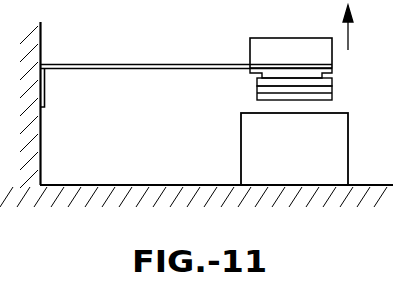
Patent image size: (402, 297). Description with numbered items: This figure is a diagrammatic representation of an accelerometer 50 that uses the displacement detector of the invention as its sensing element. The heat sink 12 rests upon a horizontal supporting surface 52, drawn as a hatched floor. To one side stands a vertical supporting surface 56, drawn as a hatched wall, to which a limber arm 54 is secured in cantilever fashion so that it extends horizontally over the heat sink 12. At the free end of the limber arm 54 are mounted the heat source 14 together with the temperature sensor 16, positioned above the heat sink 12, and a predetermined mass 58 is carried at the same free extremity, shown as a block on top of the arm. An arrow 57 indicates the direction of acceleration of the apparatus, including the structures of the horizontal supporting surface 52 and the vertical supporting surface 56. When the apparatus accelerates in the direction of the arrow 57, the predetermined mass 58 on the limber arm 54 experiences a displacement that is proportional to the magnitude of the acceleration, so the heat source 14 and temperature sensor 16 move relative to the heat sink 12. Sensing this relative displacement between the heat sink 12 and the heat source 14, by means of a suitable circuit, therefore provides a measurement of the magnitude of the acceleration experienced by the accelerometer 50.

The heat sink 12 is at (307, 157).
The heat source 14 is at (332, 95).
The temperature sensor 16 is at (332, 83).
The accelerometer 50 is at (340, 68).
The horizontal supporting surface 52 is at (163, 185).
The limber arm 54 is at (164, 70).
The vertical supporting surface 56 is at (41, 52).
The arrow 57 is at (349, 34).
The predetermined mass 58 is at (295, 50).